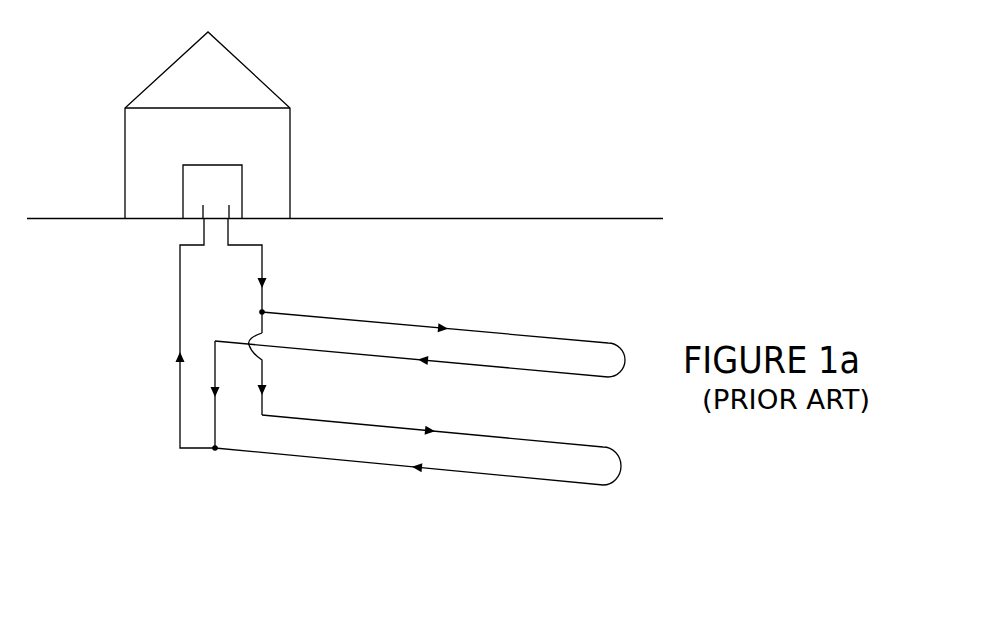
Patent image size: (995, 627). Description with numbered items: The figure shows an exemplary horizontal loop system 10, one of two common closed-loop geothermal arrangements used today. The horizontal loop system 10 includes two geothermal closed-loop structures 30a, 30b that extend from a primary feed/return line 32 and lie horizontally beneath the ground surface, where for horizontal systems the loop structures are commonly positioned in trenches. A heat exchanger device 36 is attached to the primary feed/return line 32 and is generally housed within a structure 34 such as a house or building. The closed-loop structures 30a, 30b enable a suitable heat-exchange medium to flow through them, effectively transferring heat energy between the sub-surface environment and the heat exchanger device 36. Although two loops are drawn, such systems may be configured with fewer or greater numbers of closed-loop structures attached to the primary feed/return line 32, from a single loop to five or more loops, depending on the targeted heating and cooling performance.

The horizontal loop system 10 is at (516, 174).
The geothermal closed-loop structure 30a is at (548, 337).
The geothermal closed-loop structure 30b is at (517, 481).
The primary feed/return line 32 is at (203, 232).
The structure 34 is at (291, 143).
The heat exchanger device 36 is at (227, 164).